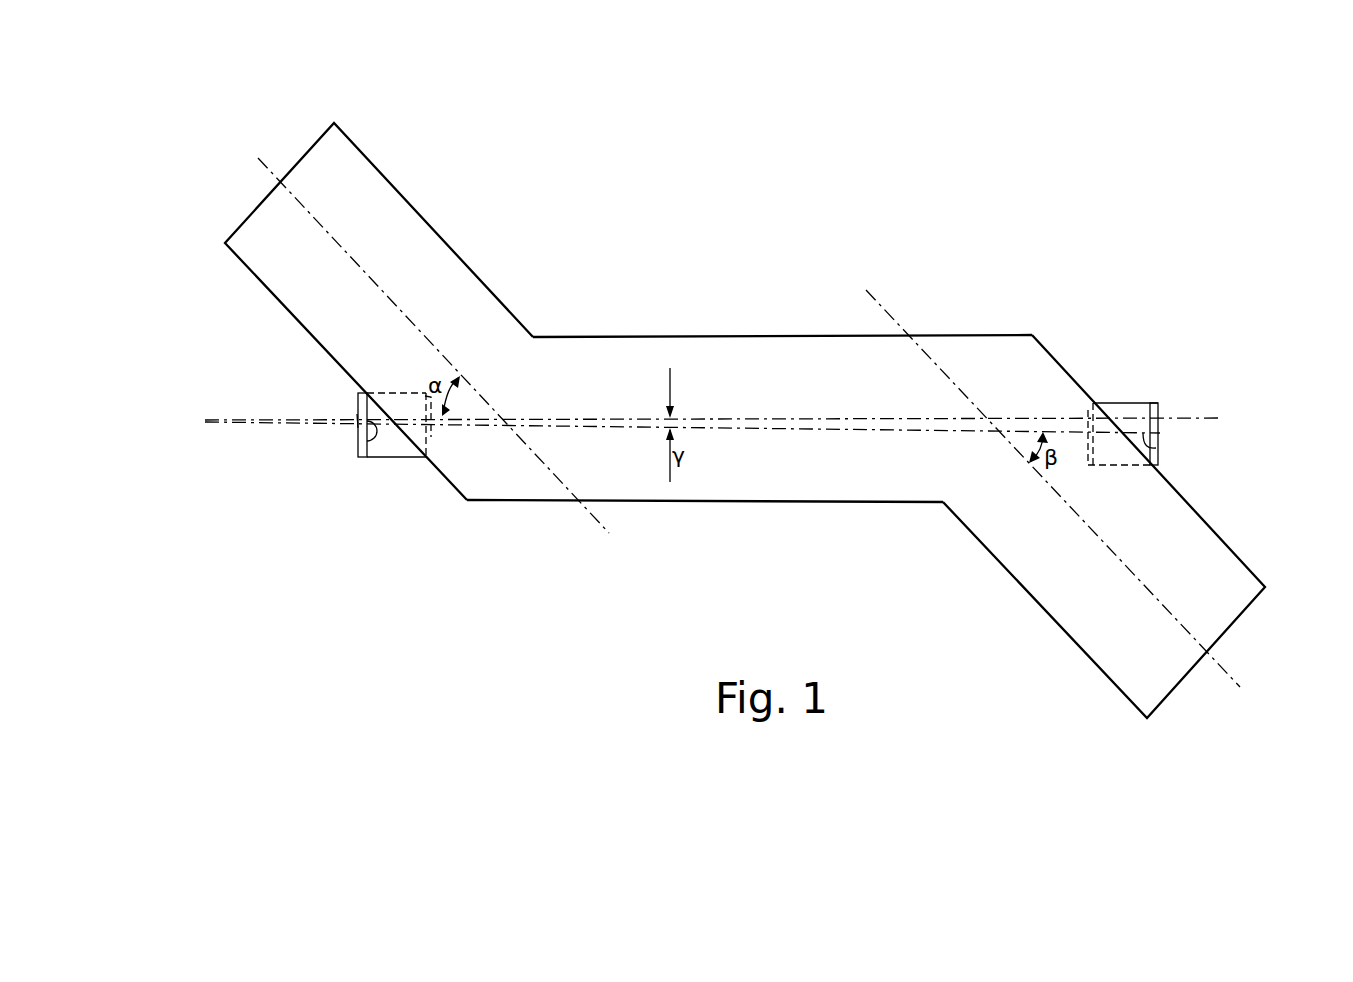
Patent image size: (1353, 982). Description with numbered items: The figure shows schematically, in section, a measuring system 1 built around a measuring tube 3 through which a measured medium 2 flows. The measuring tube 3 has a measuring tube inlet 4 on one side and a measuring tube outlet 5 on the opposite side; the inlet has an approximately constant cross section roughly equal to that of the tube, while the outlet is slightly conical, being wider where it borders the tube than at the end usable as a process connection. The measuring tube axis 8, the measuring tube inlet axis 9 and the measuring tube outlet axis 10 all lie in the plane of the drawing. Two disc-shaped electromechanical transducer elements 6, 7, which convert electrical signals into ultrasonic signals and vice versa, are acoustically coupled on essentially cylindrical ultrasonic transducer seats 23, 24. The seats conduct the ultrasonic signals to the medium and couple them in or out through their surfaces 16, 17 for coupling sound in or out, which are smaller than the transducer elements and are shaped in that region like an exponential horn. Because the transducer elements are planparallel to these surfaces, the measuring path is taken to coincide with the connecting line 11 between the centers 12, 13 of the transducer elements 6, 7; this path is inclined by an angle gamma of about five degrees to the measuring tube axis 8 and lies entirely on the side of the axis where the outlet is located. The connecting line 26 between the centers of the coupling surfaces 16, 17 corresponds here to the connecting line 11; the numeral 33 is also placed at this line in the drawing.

The measuring system 1 is at (791, 212).
The measured medium 2 is at (578, 379).
The measuring tube 3 is at (635, 357).
The measuring tube inlet 4 is at (343, 149).
The measuring tube outlet 5 is at (1237, 575).
The electromechanical transducer element 6 is at (360, 460).
The electromechanical transducer element 7 is at (1153, 403).
The measuring tube axis 8 is at (1206, 418).
The measuring tube inlet axis 9 is at (600, 533).
The measuring tube outlet axis 10 is at (1233, 673).
The connecting line 11 is at (1170, 436).
The center 12 is at (357, 426).
The center 13 is at (1159, 433).
The surface for coupling sound in or coupling sound out 16 is at (431, 437).
The surface for coupling sound in or coupling sound out 17 is at (1084, 455).
The ultrasonic transducer seat 23 is at (400, 449).
The ultrasonic transducer seat 24 is at (1116, 465).
The connecting line 26 is at (1273, 461).
The axis 33 is at (1305, 461).